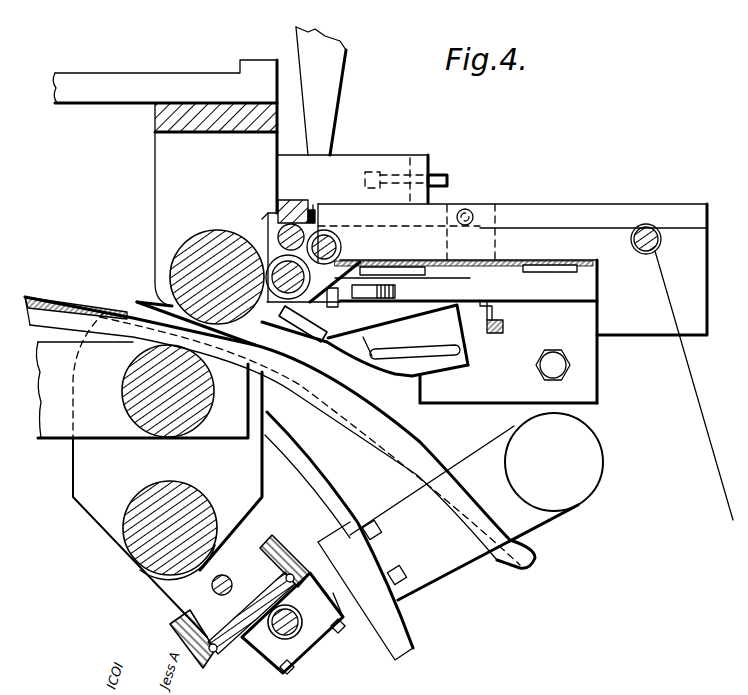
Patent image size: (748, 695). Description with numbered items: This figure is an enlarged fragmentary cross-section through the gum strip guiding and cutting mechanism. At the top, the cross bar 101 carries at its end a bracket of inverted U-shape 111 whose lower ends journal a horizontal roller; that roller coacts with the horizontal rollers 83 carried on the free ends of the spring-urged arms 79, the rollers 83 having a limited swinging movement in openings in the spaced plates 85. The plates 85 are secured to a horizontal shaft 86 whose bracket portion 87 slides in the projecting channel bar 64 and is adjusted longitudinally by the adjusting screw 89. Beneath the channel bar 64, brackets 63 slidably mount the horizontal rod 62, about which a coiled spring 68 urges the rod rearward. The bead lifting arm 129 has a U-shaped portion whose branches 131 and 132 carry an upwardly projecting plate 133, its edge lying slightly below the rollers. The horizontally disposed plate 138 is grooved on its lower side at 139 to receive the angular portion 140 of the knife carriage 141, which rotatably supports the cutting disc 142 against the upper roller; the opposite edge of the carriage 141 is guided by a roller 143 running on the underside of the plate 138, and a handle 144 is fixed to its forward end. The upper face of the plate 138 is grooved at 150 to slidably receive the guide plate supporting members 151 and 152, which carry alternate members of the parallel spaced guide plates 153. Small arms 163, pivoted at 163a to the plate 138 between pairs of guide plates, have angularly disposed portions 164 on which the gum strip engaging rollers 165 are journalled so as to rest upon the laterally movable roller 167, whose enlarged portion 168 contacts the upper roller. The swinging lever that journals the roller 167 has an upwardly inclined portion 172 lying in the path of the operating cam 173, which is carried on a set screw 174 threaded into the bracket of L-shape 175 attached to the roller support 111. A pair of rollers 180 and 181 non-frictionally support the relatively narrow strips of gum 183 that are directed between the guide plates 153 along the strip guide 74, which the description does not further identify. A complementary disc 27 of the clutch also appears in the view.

The complementary disc 27 is at (577, 465).
The horizontal rod 62 is at (302, 617).
The brackets 63 is at (333, 593).
The projecting channel bar 64 is at (303, 566).
The coiled spring 68 is at (277, 630).
The guide plate 74 is at (55, 317).
The arms 79 is at (52, 440).
The horizontal rollers 83 is at (203, 407).
The spaced plates 85 is at (93, 512).
The horizontal shaft 86 is at (128, 550).
The bracket portion 87 is at (182, 593).
The adjusting screw 89 is at (220, 595).
The cross bar 101 is at (155, 120).
The bracket of inverted U-shape 111 is at (155, 188).
The bead lifting arm 129 is at (487, 463).
The branch 131 is at (340, 540).
The branch 132 is at (197, 247).
The upwardly projecting plate 133 is at (321, 481).
The horizontally disposed plate 138 is at (598, 278).
The guide groove 139 is at (397, 292).
The angular portion 140 is at (377, 297).
The knife carriage 141 is at (387, 312).
The cutting disc 142 is at (276, 326).
The roller 143 is at (505, 327).
The handle 144 is at (433, 356).
The groove 150 is at (523, 268).
The guide plate supporting member 151 is at (437, 259).
The guide plate supporting member 152 is at (538, 262).
The guide plates 153 is at (652, 203).
The small arms 163 is at (323, 201).
The pivotal connection 163a is at (472, 208).
The angularly disposed portion 164 is at (302, 203).
The gum strip engaging rollers 165 is at (295, 200).
The laterally movable roller 167 is at (280, 260).
The enlarged portion 168 is at (265, 214).
The upwardly inclined portion 172 is at (330, 65).
The operating cam 173 is at (380, 172).
The set screw 174 is at (432, 175).
The bracket of L-shape 175 is at (375, 153).
The roller 180 is at (342, 241).
The roller 181 is at (660, 236).
The strips of gum 183 is at (553, 228).